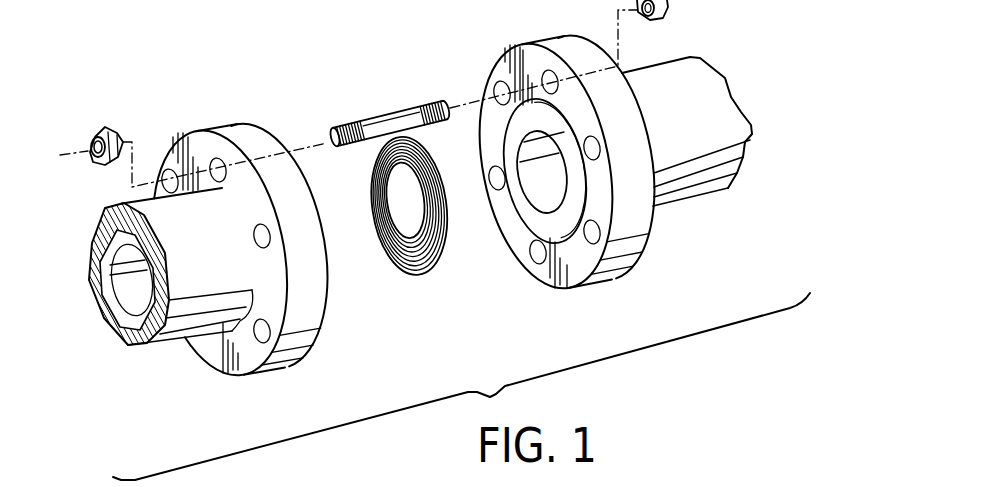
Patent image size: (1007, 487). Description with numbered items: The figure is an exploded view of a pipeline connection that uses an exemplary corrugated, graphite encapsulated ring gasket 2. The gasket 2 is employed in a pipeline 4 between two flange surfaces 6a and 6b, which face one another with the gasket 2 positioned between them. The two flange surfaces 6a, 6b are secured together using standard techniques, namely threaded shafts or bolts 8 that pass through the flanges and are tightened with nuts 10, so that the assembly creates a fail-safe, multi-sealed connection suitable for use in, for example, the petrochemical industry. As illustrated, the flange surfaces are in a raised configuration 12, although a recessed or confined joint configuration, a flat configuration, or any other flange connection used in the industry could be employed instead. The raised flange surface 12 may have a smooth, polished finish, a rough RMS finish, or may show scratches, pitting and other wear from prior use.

The ring gasket 2 is at (400, 275).
The pipeline 4 is at (727, 137).
The flange surface 6a is at (238, 132).
The flange surface 6b is at (637, 218).
The threaded shafts or bolts 8 is at (389, 118).
The nuts 10 is at (113, 130).
The raised configuration 12 is at (538, 220).